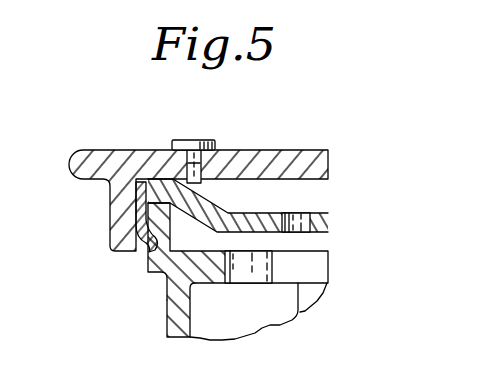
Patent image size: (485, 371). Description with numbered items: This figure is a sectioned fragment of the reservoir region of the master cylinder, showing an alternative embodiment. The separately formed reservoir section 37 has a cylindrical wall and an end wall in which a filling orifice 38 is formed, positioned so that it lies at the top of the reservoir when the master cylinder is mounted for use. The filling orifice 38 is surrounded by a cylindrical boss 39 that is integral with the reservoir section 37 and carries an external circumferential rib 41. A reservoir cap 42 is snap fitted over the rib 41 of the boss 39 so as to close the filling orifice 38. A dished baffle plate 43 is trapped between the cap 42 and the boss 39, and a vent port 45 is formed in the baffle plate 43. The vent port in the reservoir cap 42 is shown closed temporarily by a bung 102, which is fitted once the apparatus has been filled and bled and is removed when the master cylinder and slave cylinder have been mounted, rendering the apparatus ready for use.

The separately formed reservoir section 37 is at (178, 317).
The filling orifice 38 is at (301, 312).
The cylindrical boss 39 is at (158, 244).
The external circumferential rib 41 is at (135, 227).
The reservoir cap 42 is at (118, 156).
The dished baffle plate 43 is at (258, 216).
The vent port 45 is at (298, 212).
The bung 102 is at (218, 156).